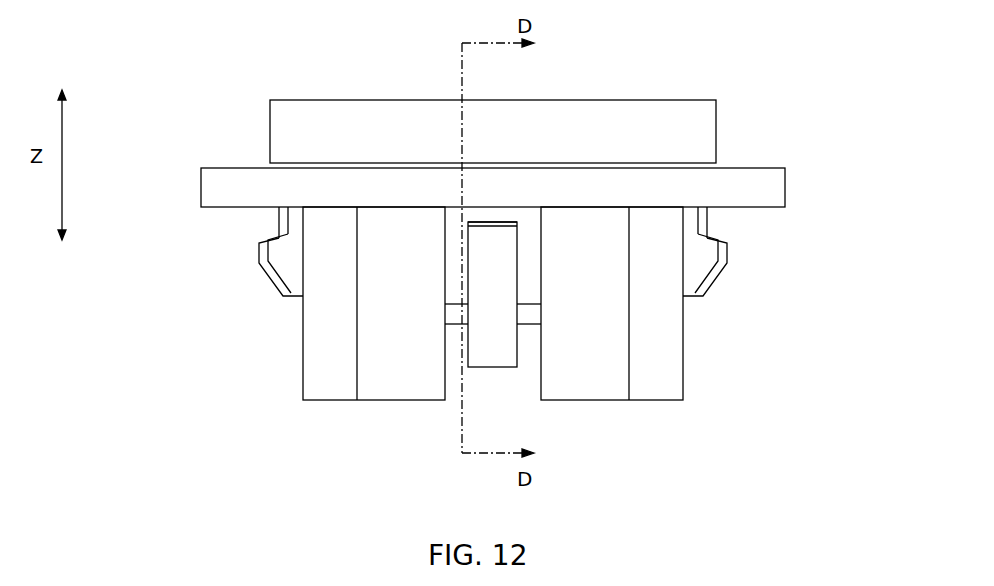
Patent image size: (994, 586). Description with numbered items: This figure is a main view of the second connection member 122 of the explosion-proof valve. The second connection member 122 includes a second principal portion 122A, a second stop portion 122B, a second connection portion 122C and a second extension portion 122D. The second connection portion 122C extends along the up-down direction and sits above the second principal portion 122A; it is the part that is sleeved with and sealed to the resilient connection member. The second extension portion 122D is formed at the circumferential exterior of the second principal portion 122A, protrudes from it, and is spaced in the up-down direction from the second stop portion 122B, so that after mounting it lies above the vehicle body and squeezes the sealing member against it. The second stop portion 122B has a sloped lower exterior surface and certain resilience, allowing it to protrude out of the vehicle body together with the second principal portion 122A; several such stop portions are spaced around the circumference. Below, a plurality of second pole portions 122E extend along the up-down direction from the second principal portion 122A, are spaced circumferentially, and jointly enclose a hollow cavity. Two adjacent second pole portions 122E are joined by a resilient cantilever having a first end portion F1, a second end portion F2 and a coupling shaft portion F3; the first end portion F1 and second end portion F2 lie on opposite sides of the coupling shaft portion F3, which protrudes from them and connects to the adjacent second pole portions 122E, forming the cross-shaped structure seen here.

The second connection member 122 is at (230, 77).
The second principal portion 122A is at (693, 218).
The second stop portion 122B is at (286, 270).
The second connection portion 122C is at (700, 126).
The second extension portion 122D is at (765, 190).
The second pole portion 122E is at (330, 340).
The first end portion F1 is at (495, 348).
The second end portion F2 is at (497, 258).
The coupling shaft portion F3 is at (528, 316).